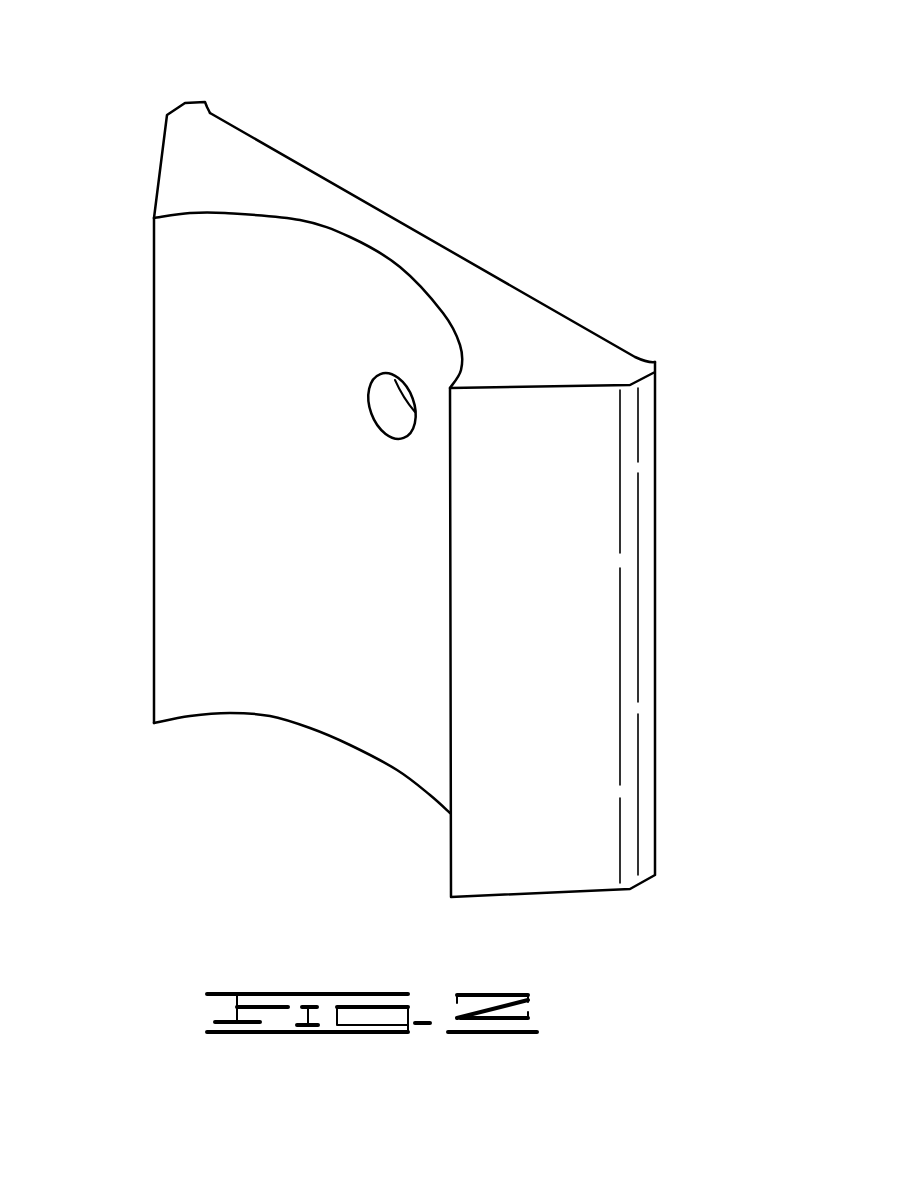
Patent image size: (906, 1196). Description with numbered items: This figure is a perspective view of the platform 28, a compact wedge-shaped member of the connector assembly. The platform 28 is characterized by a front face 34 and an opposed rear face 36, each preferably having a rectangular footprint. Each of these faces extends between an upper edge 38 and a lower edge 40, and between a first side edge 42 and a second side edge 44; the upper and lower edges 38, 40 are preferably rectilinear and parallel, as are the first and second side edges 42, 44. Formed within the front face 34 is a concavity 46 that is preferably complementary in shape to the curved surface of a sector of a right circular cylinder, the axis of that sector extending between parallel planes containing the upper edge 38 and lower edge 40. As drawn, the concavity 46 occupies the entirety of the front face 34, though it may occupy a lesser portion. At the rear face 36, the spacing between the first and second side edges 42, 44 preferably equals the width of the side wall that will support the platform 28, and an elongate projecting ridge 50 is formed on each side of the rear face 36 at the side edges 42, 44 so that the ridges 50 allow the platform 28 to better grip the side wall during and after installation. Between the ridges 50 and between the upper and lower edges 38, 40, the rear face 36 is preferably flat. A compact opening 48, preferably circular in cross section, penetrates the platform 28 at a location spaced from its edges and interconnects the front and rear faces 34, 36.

The platform 28 is at (493, 310).
The front face 34 is at (308, 338).
The rear face 36 is at (423, 235).
The upper edge 38 is at (328, 178).
The lower edge 40 is at (312, 728).
The first side edge 42 is at (153, 573).
The second side edge 44 is at (450, 735).
The concavity 46 is at (336, 550).
The opening 48 is at (383, 399).
The projecting ridge 50 is at (197, 107).